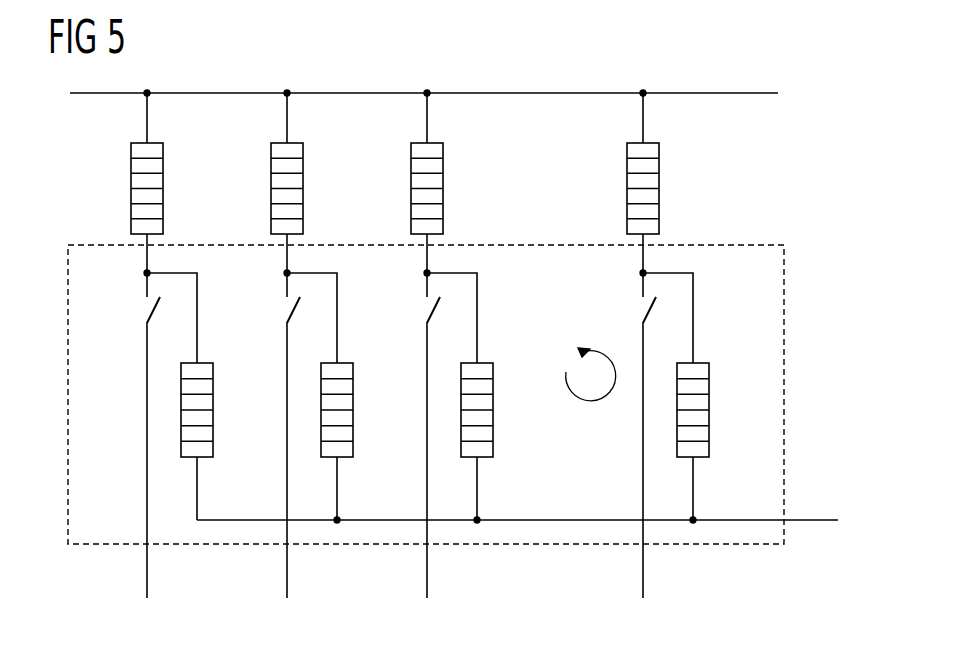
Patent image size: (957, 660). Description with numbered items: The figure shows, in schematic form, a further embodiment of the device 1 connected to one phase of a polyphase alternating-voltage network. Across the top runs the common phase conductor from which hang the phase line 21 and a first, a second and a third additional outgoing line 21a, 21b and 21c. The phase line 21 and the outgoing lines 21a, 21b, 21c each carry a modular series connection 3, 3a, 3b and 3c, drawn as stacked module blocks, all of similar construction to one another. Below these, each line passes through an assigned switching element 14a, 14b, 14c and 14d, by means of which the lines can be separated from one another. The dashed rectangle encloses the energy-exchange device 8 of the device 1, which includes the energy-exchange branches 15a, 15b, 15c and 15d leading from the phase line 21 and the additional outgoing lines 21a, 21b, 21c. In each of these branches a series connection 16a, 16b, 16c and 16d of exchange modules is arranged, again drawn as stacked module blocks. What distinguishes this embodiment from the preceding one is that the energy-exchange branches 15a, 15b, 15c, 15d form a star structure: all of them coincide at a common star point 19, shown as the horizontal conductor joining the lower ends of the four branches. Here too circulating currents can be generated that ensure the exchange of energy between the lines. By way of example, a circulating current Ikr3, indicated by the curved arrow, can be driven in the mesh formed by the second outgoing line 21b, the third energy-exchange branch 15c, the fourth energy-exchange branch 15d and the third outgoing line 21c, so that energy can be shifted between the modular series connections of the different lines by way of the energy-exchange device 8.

The device 1 is at (786, 178).
The modular series connection 3 is at (131, 183).
The modular series connection 3a is at (303, 178).
The modular series connection 3b is at (443, 178).
The modular series connection 3c is at (659, 178).
The energy-exchange device 8 is at (735, 545).
The switching element 14a is at (152, 305).
The switching element 14b is at (290, 305).
The switching element 14c is at (430, 305).
The switching element 14d is at (646, 305).
The energy-exchange branch 15a is at (198, 328).
The energy-exchange branch 15b is at (338, 328).
The energy-exchange branch 15c is at (478, 328).
The energy-exchange branch 15d is at (694, 328).
The series connection of exchange modules 16a is at (213, 400).
The series connection of exchange modules 16b is at (353, 400).
The series connection of exchange modules 16c is at (493, 400).
The series connection of exchange modules 16d is at (709, 400).
The common star point 19 is at (477, 522).
The phase line 21 is at (146, 128).
The first additional outgoing line 21a is at (288, 120).
The second additional outgoing line 21b is at (428, 120).
The third additional outgoing line 21c is at (644, 120).
The circulating current Ikr3 is at (590, 400).